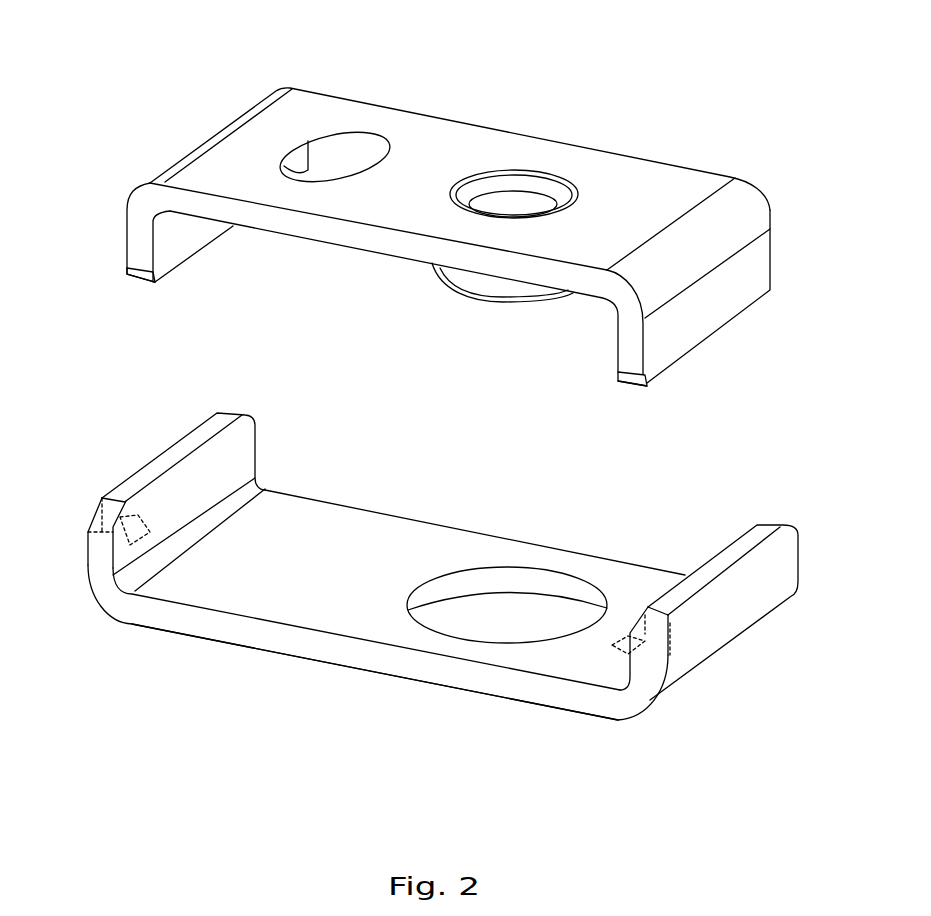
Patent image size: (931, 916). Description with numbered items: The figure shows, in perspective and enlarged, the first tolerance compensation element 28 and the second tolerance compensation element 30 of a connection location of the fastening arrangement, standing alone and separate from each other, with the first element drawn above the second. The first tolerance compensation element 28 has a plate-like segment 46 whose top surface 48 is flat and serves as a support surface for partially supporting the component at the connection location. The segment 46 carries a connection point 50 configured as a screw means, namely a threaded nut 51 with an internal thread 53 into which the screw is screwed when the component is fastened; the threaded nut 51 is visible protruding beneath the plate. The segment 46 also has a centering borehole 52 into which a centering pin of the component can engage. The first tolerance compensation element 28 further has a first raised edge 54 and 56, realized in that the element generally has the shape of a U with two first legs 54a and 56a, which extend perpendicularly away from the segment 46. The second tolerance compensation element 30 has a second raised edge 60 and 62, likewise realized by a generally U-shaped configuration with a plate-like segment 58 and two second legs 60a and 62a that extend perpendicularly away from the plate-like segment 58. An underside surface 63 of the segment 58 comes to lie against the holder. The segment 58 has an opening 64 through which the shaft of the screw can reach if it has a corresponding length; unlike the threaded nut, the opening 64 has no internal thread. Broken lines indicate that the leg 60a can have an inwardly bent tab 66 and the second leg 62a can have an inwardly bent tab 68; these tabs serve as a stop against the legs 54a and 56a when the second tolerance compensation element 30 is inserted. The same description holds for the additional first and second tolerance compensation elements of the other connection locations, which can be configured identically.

The first tolerance compensation element 28 is at (410, 227).
The segment 46 is at (460, 205).
The top surface 48 is at (420, 141).
The connection point 50 is at (527, 141).
The threaded nut 51 is at (480, 284).
The centering borehole 52 is at (338, 148).
The internal thread 53 is at (502, 198).
The first raised edge 54 is at (131, 270).
The first leg 54a is at (138, 250).
The first raised edge 56 is at (662, 329).
The first leg 56a is at (627, 350).
The second tolerance compensation element 30 is at (484, 572).
The segment 58 is at (386, 637).
The second raised edge 60 is at (209, 525).
The second leg 60a is at (238, 450).
The second raised edge 62 is at (746, 597).
The second leg 62a is at (780, 563).
The underside surface 63 is at (478, 698).
The opening 64 is at (517, 612).
The inwardly bent tab 66 is at (142, 542).
The inwardly bent tab 68 is at (614, 647).